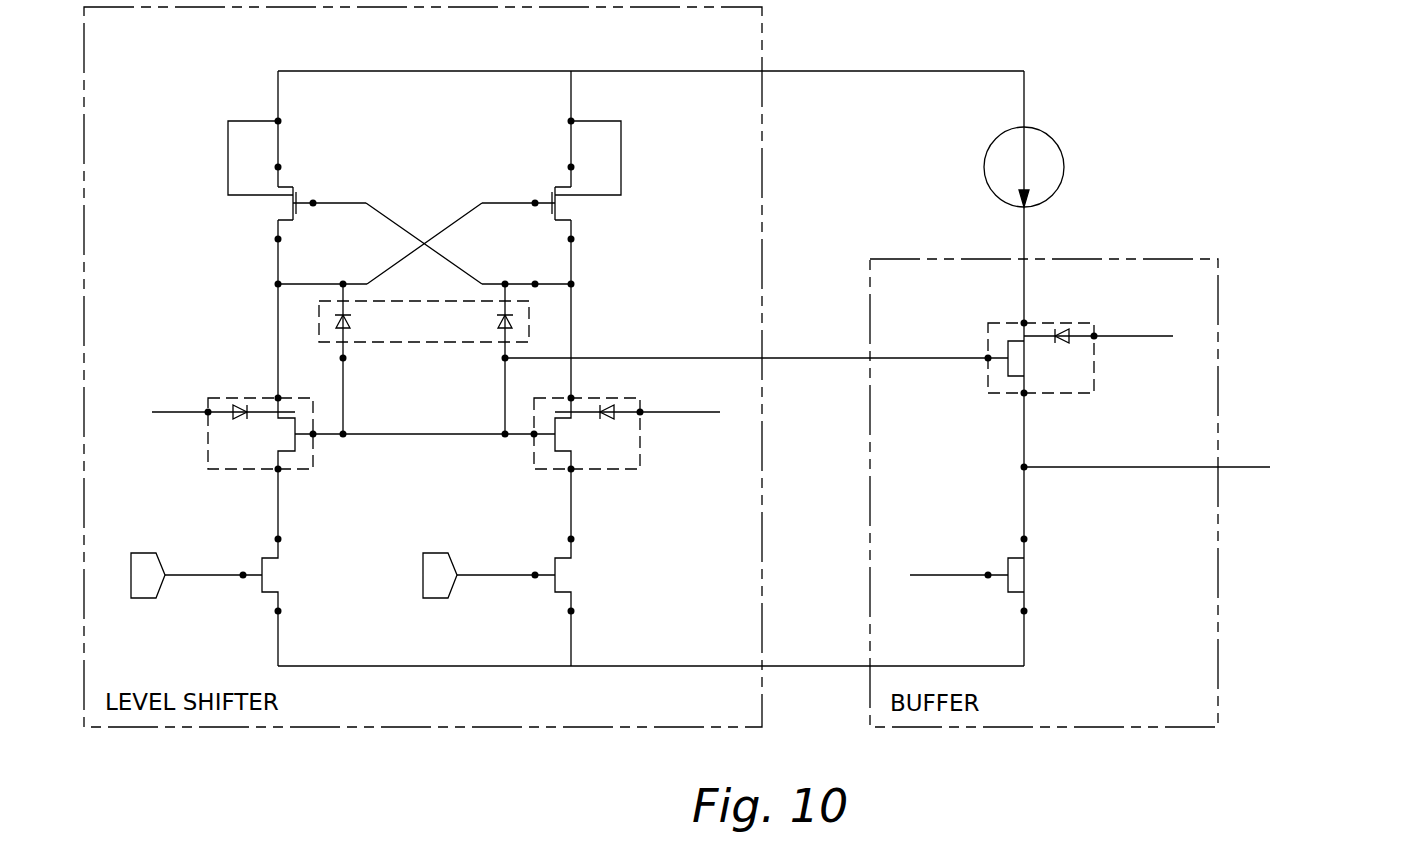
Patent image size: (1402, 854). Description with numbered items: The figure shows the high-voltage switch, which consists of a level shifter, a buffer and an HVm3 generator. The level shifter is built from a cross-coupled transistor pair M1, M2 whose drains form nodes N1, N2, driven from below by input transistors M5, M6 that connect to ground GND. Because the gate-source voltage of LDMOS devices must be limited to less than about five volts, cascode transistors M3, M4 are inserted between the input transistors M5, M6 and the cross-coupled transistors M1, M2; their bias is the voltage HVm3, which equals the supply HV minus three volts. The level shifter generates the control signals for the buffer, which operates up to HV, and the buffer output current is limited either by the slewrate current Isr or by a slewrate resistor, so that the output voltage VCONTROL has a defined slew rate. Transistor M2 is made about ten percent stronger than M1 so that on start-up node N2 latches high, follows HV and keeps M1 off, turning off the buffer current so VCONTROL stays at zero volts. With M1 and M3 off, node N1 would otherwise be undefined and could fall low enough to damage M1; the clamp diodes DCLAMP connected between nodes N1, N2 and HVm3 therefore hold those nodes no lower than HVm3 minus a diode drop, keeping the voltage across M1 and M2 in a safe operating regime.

The cross-coupled transistor M1 is at (297, 177).
The cross-coupled transistor M2 is at (551, 177).
The cascode transistor M3 is at (237, 450).
The cascode transistor M4 is at (623, 450).
The input transistor M5 is at (206, 567).
The input transistor M6 is at (499, 567).
The node N1 is at (297, 285).
The node N2 is at (548, 285).
The clamp diodes DCLAMP is at (424, 359).
The cascode bias voltage HVm3 is at (425, 421).
The high voltage supply HV is at (651, 57).
The ground GND is at (651, 653).
The slewrate current Isr is at (1085, 368).
The output voltage Vcontrol VCONTROL is at (1196, 468).